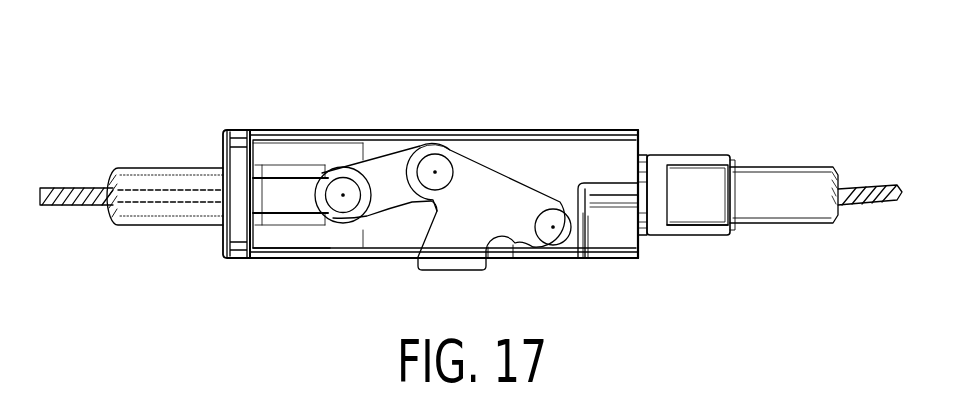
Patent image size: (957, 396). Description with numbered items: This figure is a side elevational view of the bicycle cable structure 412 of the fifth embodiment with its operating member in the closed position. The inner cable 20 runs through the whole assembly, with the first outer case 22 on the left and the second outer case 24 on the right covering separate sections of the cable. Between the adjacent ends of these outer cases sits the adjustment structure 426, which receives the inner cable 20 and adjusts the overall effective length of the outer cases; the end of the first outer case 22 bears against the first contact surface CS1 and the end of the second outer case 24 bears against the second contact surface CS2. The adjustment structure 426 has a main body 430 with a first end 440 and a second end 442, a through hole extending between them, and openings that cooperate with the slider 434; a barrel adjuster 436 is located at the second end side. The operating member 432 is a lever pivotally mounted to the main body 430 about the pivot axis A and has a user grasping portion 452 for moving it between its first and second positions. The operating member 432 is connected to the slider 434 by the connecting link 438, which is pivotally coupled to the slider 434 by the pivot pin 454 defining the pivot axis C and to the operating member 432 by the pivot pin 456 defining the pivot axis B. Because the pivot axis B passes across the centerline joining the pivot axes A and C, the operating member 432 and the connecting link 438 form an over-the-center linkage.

The bicycle cable structure 412 is at (157, 70).
The inner cable 20 is at (65, 187).
The first outer case 22 is at (136, 166).
The first end 440 is at (216, 142).
The slider 434 is at (283, 171).
The pivot pin 454 is at (353, 176).
The connecting link 438 is at (382, 175).
The pivot axis B is at (435, 170).
The pivot pin 456 is at (456, 153).
The operating member 432 is at (500, 169).
The user grasping portion 452 is at (546, 198).
The second end 442 is at (640, 132).
The barrel adjuster 436 is at (702, 151).
The second outer case 24 is at (770, 164).
The first contact surface CS1 is at (322, 220).
The pivot axis C is at (342, 197).
The adjustment structure 426 is at (375, 290).
The pivot axis A is at (553, 229).
The main body 430 is at (613, 262).
The second contact surface CS2 is at (670, 212).